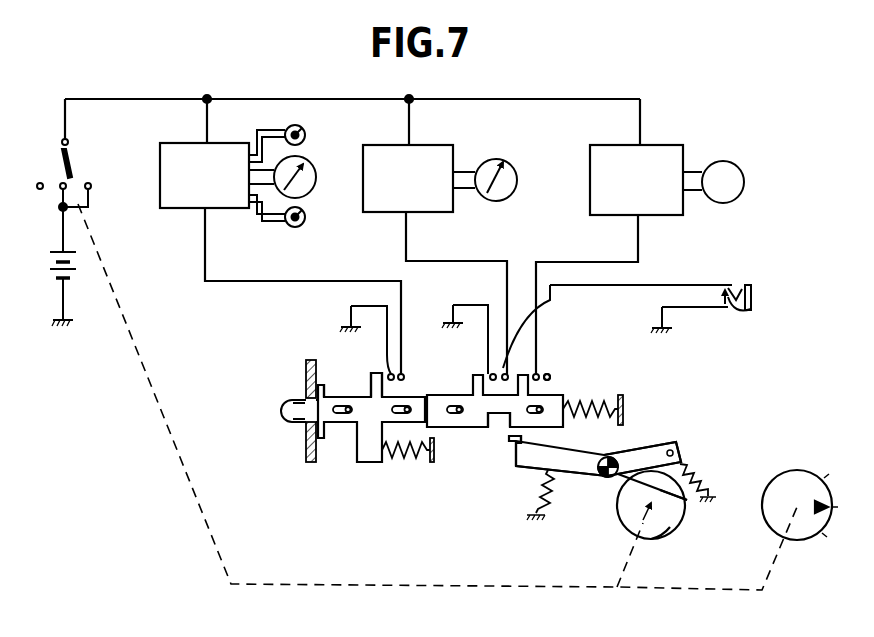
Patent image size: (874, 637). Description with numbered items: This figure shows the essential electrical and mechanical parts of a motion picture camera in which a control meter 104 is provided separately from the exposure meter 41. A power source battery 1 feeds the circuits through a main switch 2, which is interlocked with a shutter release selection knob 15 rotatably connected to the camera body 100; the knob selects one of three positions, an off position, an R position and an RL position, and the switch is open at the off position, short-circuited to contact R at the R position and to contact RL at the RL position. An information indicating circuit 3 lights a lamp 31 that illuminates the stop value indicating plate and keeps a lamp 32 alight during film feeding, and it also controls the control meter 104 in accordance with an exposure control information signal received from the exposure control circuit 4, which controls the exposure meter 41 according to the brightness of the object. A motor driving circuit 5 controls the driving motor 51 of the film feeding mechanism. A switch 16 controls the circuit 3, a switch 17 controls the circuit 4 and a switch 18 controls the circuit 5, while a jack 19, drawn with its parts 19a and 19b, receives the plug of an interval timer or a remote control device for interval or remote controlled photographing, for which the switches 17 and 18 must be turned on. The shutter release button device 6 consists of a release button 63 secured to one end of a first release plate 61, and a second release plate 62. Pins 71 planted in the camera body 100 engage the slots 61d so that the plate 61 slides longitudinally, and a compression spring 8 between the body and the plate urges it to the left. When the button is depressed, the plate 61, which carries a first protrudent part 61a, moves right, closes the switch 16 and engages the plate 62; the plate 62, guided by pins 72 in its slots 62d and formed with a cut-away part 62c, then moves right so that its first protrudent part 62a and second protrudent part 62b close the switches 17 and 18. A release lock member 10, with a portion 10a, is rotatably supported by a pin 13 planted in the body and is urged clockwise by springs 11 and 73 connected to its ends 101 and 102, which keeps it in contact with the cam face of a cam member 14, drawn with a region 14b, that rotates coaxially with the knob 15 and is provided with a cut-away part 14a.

The power source battery 1 is at (50, 262).
The main switch 2 is at (68, 152).
The information indicating circuit 3 is at (185, 143).
The lamp 31 is at (303, 130).
The lamp 32 is at (305, 222).
The control meter 104 is at (313, 175).
The exposure control circuit 4 is at (441, 147).
The exposure meter 41 is at (495, 165).
The motor driving circuit 5 is at (685, 153).
The driving motor 51 is at (732, 167).
The shutter release button device 6 is at (290, 420).
The release button 63 is at (292, 403).
The first release plate 61 is at (363, 413).
The first protrudent part 61a is at (370, 381).
The slots 61d is at (338, 402).
The pins 71 is at (347, 418).
The compression spring 8 is at (412, 453).
The camera body 100 is at (306, 450).
The switch 16 is at (393, 370).
The second release plate 62 is at (478, 413).
The first protrudent part 62a is at (481, 373).
The second protrudent part 62b is at (525, 370).
The cut-away part 62c is at (498, 422).
The slots 62d is at (457, 406).
The pins 72 is at (610, 405).
The switch 17 is at (542, 326).
The switch 18 is at (547, 371).
The jack 19 is at (751, 291).
The contact 19a is at (745, 310).
The contact 19b is at (733, 288).
The release lock member 10 is at (568, 462).
The lever hook 10a is at (503, 445).
The end of release lock member 101 is at (590, 468).
The end of release lock member 102 is at (677, 445).
The pin 13 is at (620, 457).
The spring 11 is at (557, 510).
The spring 73 is at (696, 468).
The cam member 14 is at (650, 538).
The cut-away part 14a is at (683, 498).
The cam surface 14b is at (672, 527).
The shutter release selection knob 15 is at (797, 537).